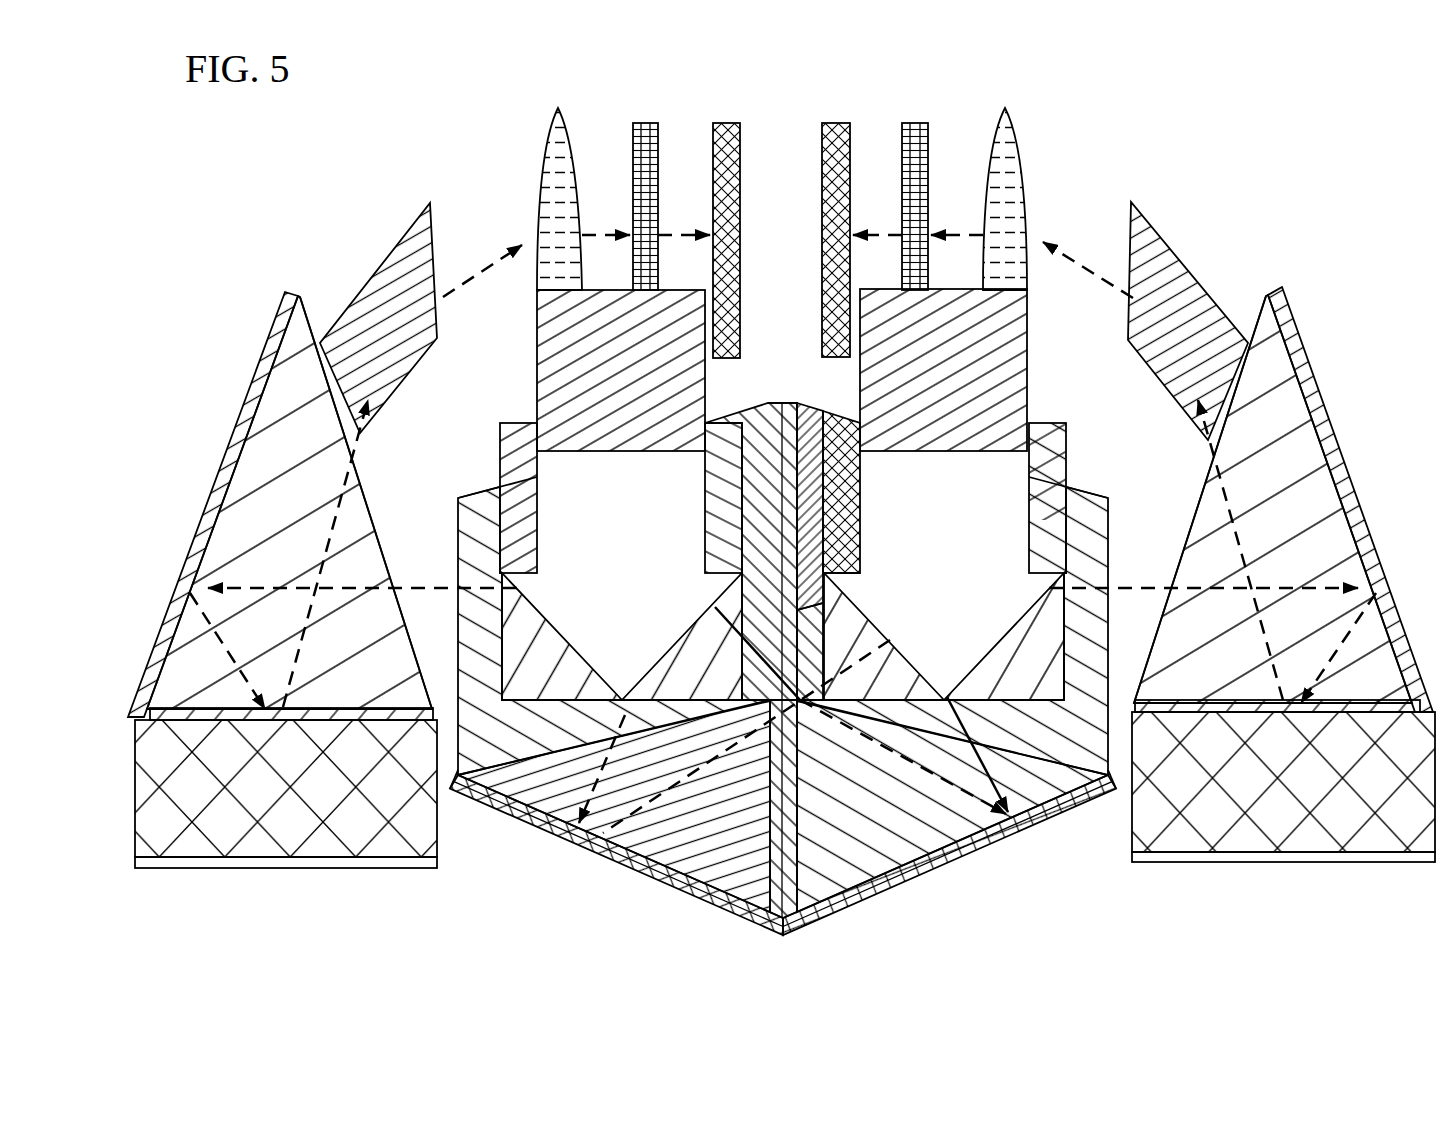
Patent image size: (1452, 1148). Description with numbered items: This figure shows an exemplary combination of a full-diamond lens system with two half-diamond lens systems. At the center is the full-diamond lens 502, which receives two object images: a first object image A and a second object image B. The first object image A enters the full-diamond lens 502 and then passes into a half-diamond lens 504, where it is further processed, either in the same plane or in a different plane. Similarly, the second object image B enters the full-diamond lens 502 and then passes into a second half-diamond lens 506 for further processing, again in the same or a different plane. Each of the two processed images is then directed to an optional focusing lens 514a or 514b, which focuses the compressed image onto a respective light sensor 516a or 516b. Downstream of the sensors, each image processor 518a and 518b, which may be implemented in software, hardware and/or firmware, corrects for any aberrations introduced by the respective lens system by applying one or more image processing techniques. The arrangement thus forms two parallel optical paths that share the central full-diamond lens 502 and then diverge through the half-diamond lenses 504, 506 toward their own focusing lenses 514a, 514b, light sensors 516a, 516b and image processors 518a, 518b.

The full-diamond lens 502 is at (917, 895).
The half-diamond lens 504 is at (1289, 866).
The half-diamond lens 506 is at (298, 872).
The focusing lens 514a is at (1008, 114).
The focusing lens 514b is at (553, 114).
The light sensor 516a is at (917, 122).
The light sensor 516b is at (647, 122).
The image processor 518a is at (835, 122).
The image processor 518b is at (725, 122).